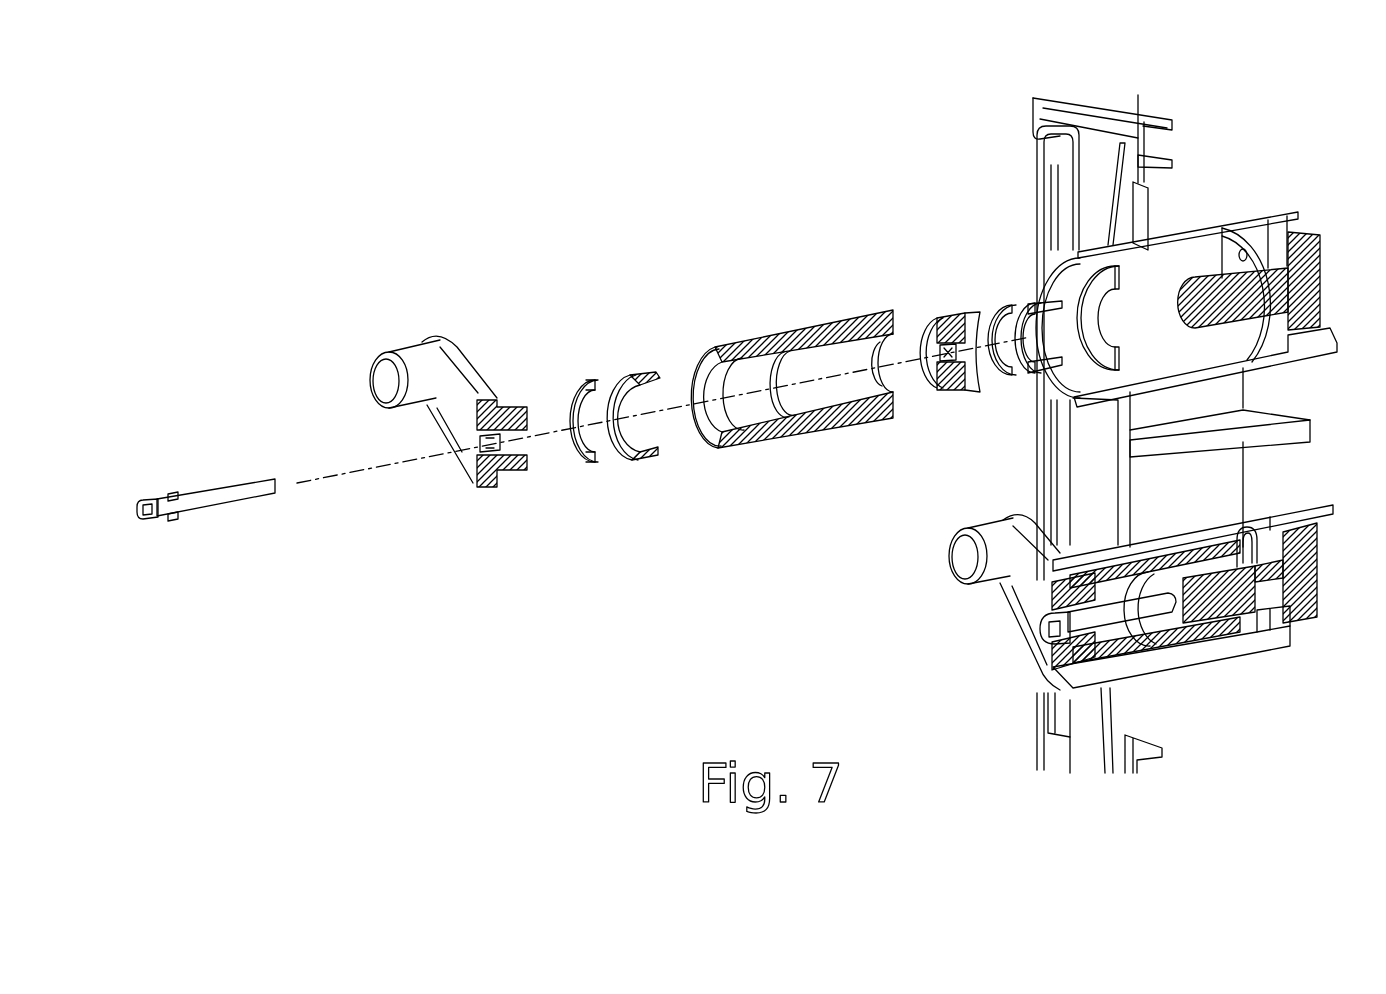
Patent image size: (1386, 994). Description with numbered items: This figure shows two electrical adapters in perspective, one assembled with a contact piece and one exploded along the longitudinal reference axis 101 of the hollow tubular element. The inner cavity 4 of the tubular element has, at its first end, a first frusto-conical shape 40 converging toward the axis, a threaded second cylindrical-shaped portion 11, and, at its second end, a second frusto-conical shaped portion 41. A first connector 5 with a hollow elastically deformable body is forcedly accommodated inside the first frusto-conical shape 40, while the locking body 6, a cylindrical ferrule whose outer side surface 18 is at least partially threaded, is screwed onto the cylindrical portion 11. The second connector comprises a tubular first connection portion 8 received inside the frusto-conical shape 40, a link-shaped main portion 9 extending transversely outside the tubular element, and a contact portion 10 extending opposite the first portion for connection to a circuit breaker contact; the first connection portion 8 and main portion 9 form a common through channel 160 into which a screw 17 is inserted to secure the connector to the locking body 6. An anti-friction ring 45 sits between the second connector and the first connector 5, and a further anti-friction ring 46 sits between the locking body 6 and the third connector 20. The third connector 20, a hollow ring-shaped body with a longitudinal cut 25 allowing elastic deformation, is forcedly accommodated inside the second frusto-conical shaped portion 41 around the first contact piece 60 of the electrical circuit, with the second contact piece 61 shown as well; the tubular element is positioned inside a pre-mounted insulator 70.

The inner cavity 4 is at (794, 450).
The first connector 5 is at (645, 377).
The locking body 6 is at (942, 362).
The first connection portion 8 is at (501, 526).
The main portion 9 is at (472, 363).
The contact portion 10 is at (430, 370).
The second cylindrical-shaped portion 11 is at (1179, 643).
The screw 17 is at (216, 512).
The outer side surface 18 is at (954, 311).
The third connector 20 is at (976, 265).
The longitudinal cut 25 is at (998, 305).
The first frusto-conical shape 40 is at (716, 428).
The second frusto-conical shaped portion 41 is at (863, 391).
The anti-friction ring 45 is at (1022, 320).
The further anti-friction ring 46 is at (587, 386).
The first contact piece 60 is at (1220, 290).
The second contact piece 61 is at (1256, 593).
The insulator 70 is at (1290, 218).
The longitudinal reference axis 101 is at (363, 478).
The common through channel 160 is at (482, 447).